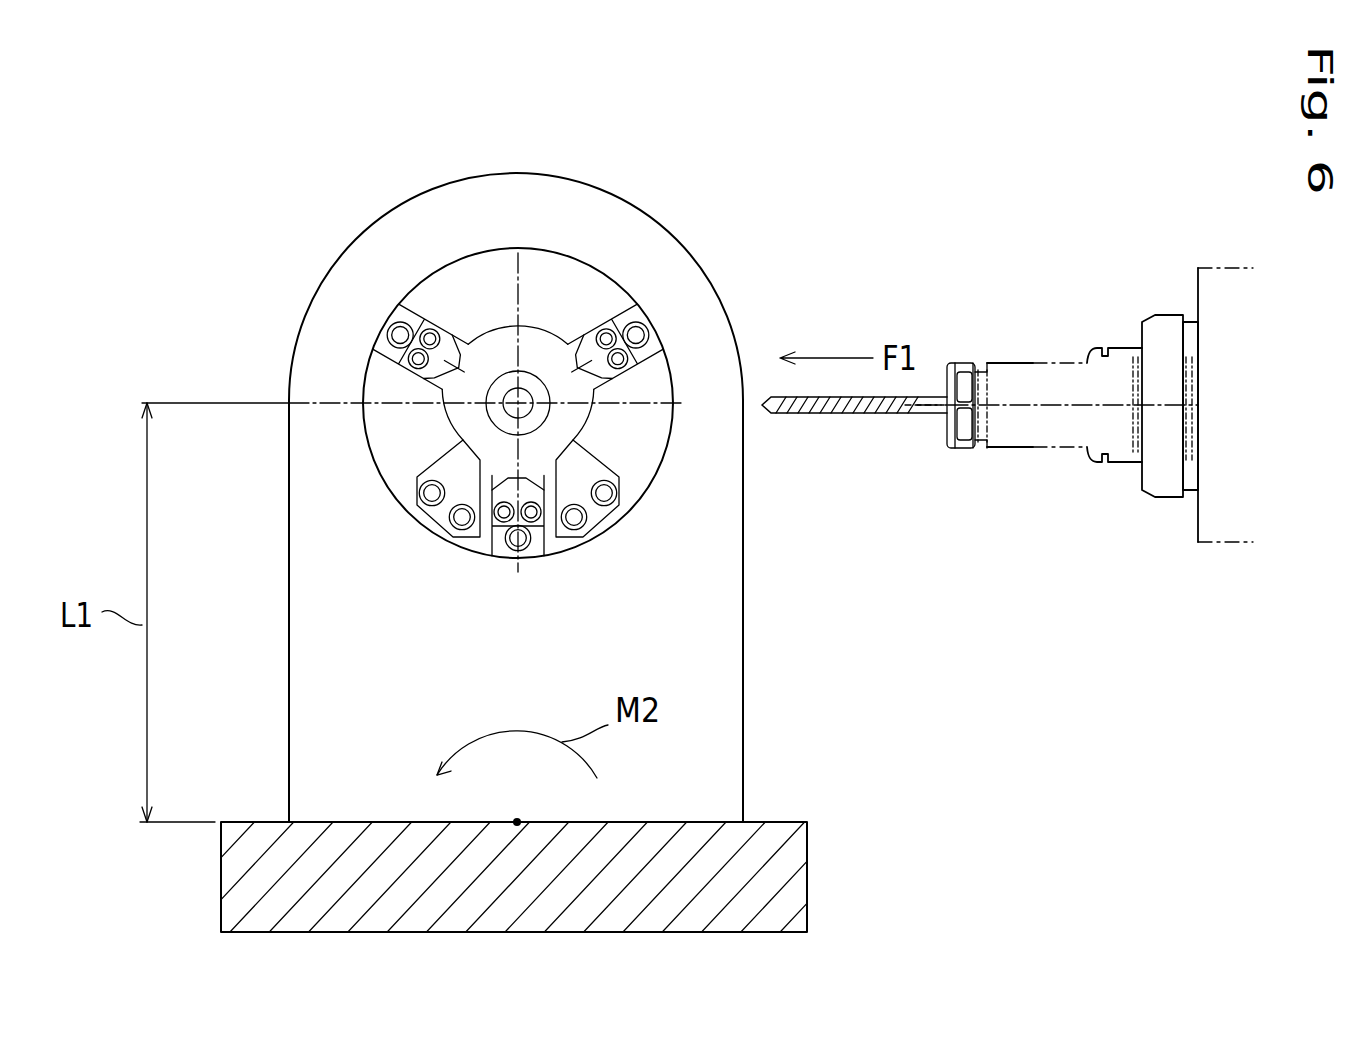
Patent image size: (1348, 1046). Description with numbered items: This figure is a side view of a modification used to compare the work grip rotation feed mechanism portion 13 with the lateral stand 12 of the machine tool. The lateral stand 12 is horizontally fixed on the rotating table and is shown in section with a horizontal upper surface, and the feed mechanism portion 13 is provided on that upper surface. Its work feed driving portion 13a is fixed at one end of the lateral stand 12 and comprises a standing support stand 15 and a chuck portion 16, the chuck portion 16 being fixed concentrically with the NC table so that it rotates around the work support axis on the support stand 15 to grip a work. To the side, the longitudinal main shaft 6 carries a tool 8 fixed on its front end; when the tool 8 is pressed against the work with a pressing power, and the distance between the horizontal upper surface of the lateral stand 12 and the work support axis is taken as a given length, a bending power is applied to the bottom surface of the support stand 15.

The main shaft 6 is at (1167, 325).
The tool 8 is at (860, 415).
The lateral stand 12 is at (795, 877).
The work grip rotation feed mechanism portion 13 is at (496, 497).
The work feed driving portion 13a is at (697, 307).
The support stand 15 is at (725, 620).
The chuck portion 16 is at (558, 280).